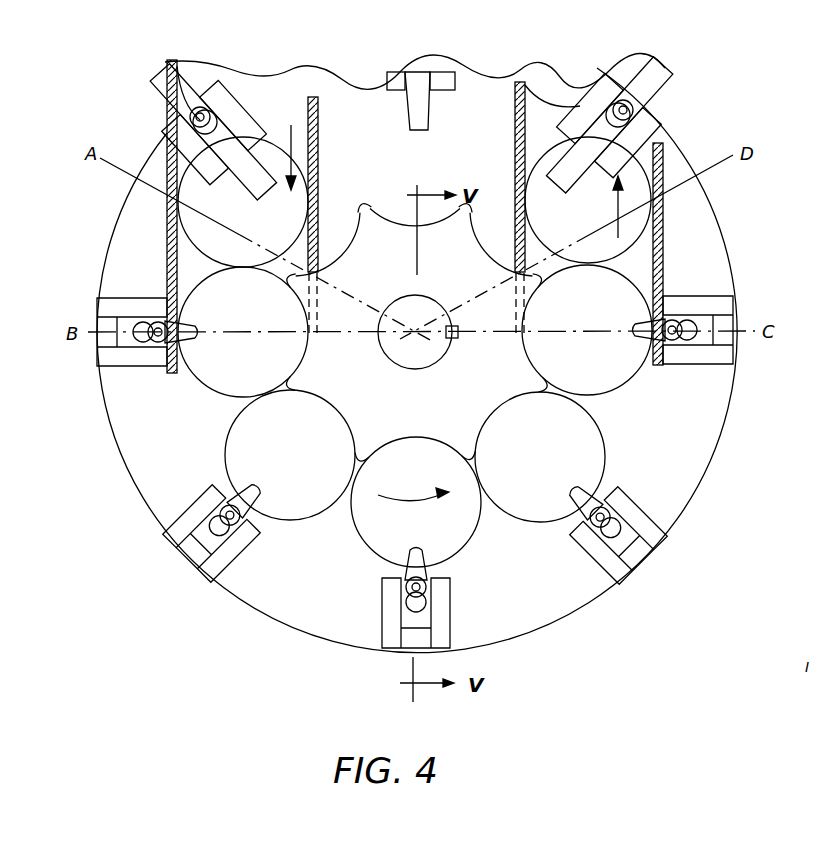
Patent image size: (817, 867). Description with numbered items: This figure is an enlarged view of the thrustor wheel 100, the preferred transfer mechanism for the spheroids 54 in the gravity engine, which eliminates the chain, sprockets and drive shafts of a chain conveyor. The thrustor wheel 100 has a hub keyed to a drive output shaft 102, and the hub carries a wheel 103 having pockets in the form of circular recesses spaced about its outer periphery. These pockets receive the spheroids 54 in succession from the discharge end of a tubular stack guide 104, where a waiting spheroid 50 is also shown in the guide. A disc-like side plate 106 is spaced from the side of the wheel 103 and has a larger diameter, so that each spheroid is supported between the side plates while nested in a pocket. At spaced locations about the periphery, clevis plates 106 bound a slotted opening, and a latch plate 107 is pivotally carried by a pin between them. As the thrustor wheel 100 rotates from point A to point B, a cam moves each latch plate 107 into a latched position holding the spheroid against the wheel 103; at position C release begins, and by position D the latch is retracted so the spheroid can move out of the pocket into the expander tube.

The thrustor wheel 100 is at (739, 253).
The drive output shaft 102 is at (406, 300).
The wheel 103 is at (415, 413).
The tubular stack guide 104 is at (318, 172).
The side plate / clevis plates 106 is at (449, 608).
The latch plate 107 is at (262, 190).
The spheroids 54 is at (232, 209).
The ring in chute 50 is at (577, 218).